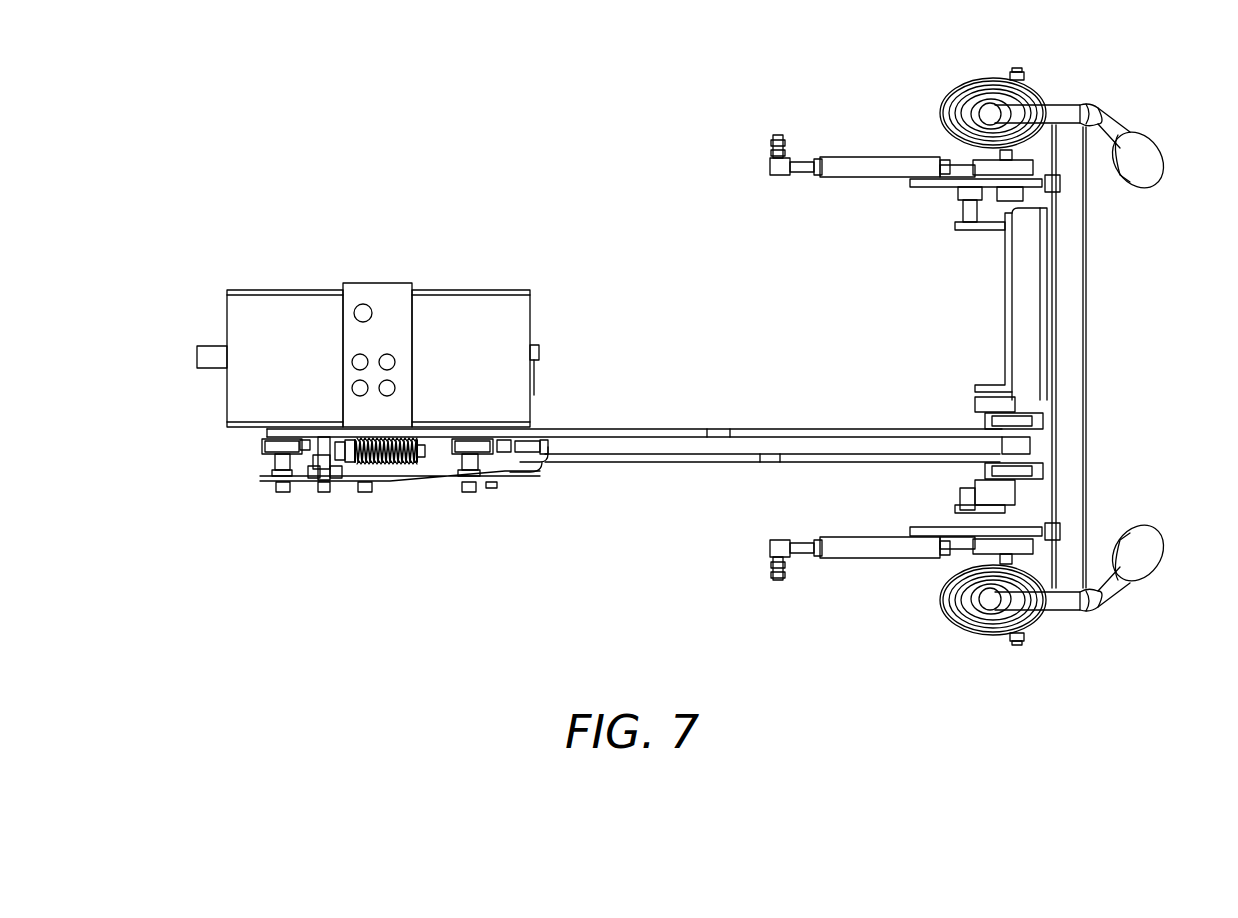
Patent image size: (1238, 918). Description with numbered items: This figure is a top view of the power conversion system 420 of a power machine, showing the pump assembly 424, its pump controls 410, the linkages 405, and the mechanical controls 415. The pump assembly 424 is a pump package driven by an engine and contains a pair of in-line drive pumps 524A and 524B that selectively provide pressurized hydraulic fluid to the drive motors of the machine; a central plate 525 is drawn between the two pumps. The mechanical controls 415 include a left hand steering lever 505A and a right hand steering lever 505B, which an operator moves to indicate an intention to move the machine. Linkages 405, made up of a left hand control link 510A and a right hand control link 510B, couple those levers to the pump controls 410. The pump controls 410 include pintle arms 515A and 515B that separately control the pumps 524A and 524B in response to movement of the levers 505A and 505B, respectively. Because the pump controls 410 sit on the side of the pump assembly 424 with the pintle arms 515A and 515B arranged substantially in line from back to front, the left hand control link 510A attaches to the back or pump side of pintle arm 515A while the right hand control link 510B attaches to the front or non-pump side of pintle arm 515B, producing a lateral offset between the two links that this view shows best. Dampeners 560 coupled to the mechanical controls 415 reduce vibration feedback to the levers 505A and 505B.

The linkages 405 is at (868, 392).
The pump controls 410 is at (347, 538).
The mechanical controls 415 is at (1177, 207).
The power conversion system 420 is at (550, 143).
The pump assembly 424 is at (258, 232).
The left hand steering lever 505A is at (1108, 110).
The right hand steering lever 505B is at (1103, 600).
The left hand control link 510A is at (690, 429).
The right hand control link 510B is at (687, 462).
The pintle arm 515A is at (262, 446).
The pintle arm 515B is at (497, 454).
The drive pump 524A is at (238, 305).
The drive pump 524B is at (500, 305).
The center plate 525 is at (363, 300).
The dampeners 560 is at (898, 157).